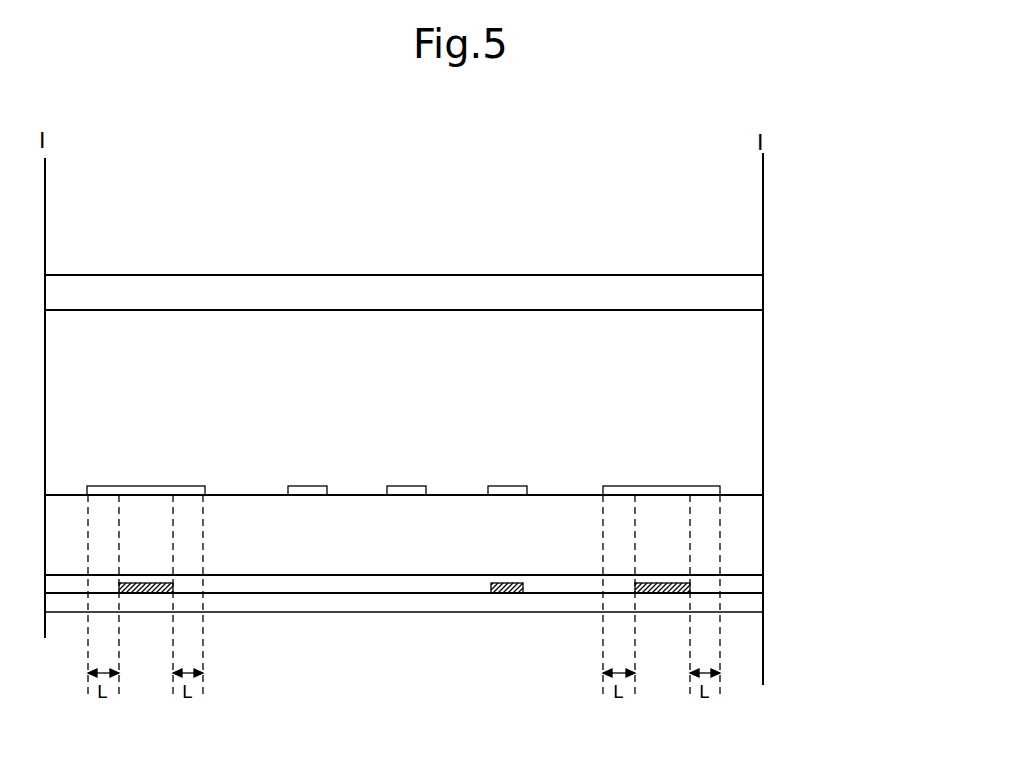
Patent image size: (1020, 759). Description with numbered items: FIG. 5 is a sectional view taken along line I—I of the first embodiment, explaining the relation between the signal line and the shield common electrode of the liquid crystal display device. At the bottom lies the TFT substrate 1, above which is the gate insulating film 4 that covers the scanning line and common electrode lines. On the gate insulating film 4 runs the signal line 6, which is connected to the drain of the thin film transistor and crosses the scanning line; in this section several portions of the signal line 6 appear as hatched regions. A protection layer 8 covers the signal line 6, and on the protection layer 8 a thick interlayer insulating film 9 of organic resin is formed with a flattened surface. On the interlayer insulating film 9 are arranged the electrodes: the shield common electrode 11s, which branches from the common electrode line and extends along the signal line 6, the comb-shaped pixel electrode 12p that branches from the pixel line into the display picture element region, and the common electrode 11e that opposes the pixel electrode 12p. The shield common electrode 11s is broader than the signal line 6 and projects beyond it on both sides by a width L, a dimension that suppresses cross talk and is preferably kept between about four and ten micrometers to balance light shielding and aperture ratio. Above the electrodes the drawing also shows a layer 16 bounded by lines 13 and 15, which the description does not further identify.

The TFT substrate 1 is at (735, 620).
The gate insulating film 4 is at (742, 607).
The signal line 6 is at (145, 594).
The protection layer 8 is at (742, 583).
The interlayer insulating film 9 is at (740, 541).
The shield common electrode 11s is at (108, 487).
The common electrode 11e is at (410, 486).
The pixel electrode 12p is at (308, 486).
The counter substrate 13 is at (765, 268).
The common electrode 15 is at (765, 293).
The liquid crystal layer 16 is at (800, 316).